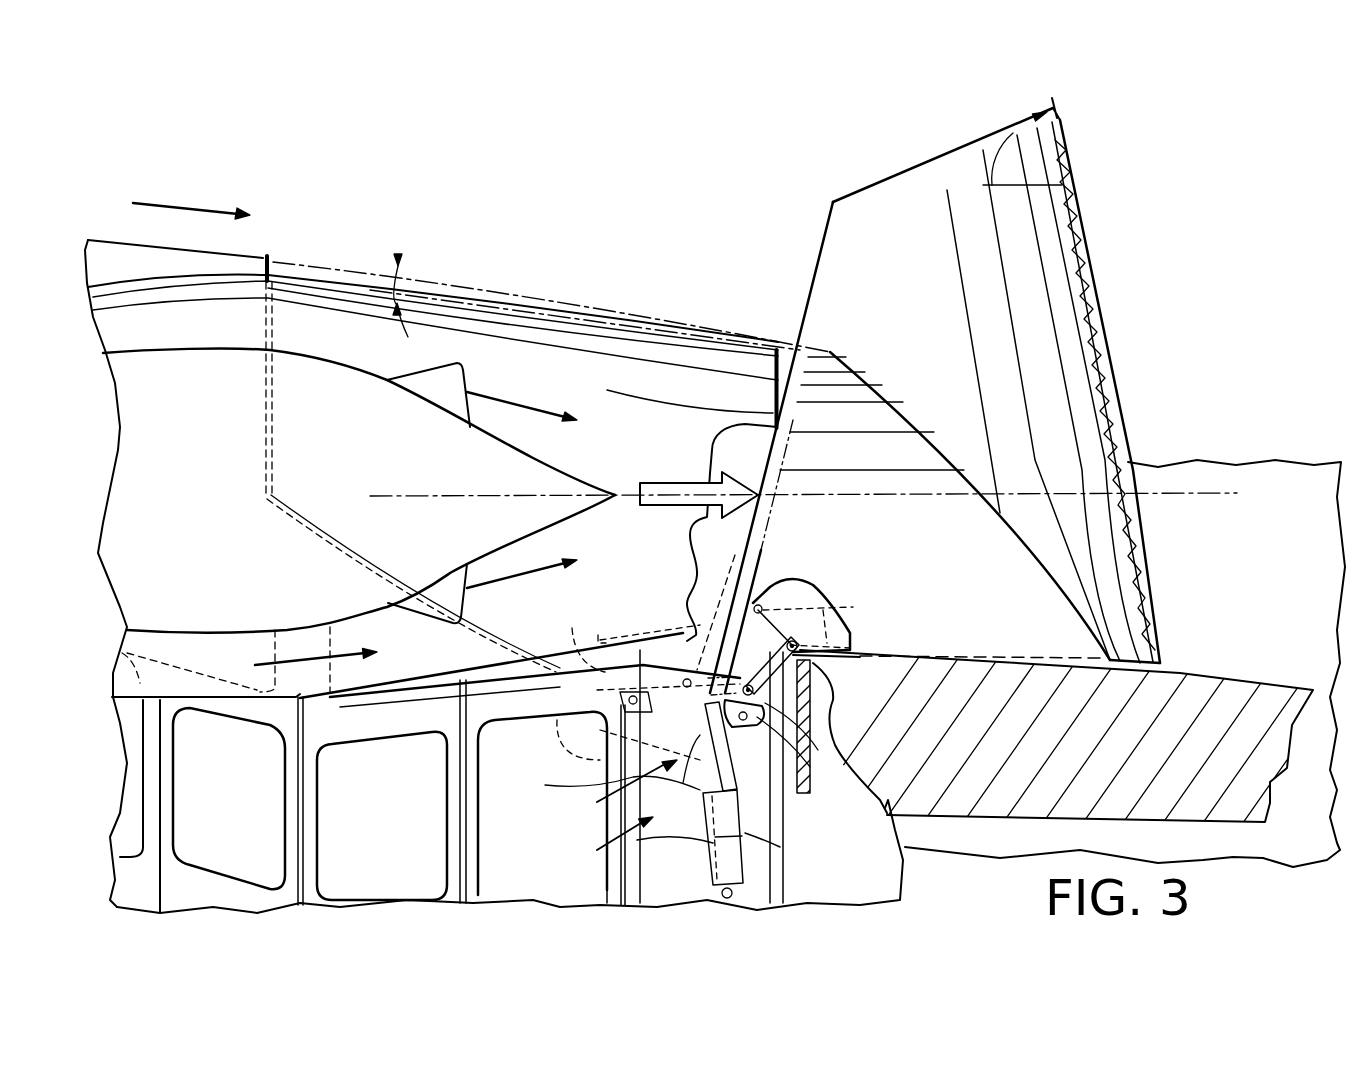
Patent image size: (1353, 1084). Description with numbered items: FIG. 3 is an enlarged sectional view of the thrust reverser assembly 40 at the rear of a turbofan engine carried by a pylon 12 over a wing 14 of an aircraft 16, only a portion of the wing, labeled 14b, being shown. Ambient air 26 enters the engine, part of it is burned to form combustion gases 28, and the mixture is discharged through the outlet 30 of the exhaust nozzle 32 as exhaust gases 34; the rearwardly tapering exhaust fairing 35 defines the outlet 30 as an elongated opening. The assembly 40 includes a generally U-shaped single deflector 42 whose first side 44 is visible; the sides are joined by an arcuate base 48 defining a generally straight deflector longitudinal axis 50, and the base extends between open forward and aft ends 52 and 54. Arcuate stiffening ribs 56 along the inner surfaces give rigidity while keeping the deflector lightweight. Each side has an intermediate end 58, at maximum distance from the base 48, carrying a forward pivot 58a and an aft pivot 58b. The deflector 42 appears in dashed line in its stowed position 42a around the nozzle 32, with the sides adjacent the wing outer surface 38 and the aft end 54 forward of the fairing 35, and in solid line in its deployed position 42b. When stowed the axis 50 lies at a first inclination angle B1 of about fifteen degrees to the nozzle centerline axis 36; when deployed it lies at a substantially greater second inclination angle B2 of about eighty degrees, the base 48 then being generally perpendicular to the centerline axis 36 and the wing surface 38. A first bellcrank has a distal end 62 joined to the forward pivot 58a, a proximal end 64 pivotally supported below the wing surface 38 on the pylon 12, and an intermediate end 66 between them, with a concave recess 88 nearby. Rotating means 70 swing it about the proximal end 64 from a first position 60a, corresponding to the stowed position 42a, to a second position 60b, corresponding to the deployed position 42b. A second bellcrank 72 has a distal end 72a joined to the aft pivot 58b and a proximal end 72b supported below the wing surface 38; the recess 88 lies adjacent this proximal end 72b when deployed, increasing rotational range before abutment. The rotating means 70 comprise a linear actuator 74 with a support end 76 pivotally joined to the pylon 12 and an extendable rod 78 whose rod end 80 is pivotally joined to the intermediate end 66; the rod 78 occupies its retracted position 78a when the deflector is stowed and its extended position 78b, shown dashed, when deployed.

The pylon 12 is at (117, 905).
The wing 14 is at (1119, 840).
The lower wall portion 14b is at (867, 833).
The aircraft 16 is at (1224, 454).
The ambient air 26 is at (220, 205).
The combustion gases 28 is at (517, 403).
The outlet 30 is at (872, 398).
The exhaust nozzle 32 is at (467, 312).
The exhaust gases 34 is at (677, 480).
The exhaust fairing 35 is at (838, 340).
The nozzle centerline axis 36 is at (1191, 495).
The wing outer surface 38 is at (1230, 685).
The thrust reverser assembly 40 is at (1134, 347).
The deflector 42 is at (908, 152).
The stowed position 42a is at (492, 281).
The deployed position 42b is at (1083, 237).
The first side 44 is at (1052, 280).
The base 48 is at (1122, 407).
The deflector longitudinal axis 50 is at (1062, 110).
The forward end 52 is at (877, 187).
The aft end 54 is at (1045, 652).
The stiffening ribs 56 is at (1070, 330).
The intermediate end 58 is at (790, 576).
The forward pivot 58a is at (765, 560).
The aft pivot 58b is at (826, 608).
The first bellcrank first position 60a is at (635, 639).
The first bellcrank second position 60b is at (733, 645).
The distal end 62 is at (762, 605).
The proximal end 64 is at (753, 733).
The intermediate end 66 is at (617, 672).
The rotating means 70 is at (608, 842).
The second bellcrank 72 is at (830, 695).
The distal end 72a is at (843, 633).
The proximal end 72b is at (827, 730).
The linear actuator 74 is at (747, 832).
The support end 76 is at (740, 892).
The extendable rod 78 is at (622, 788).
The retracted position 78a is at (755, 820).
The extended position 78b is at (697, 767).
The rod end 80 is at (617, 730).
The concave recess 88 is at (823, 748).
The first inclination angle B1 is at (398, 263).
The second inclination angle B2 is at (1012, 130).